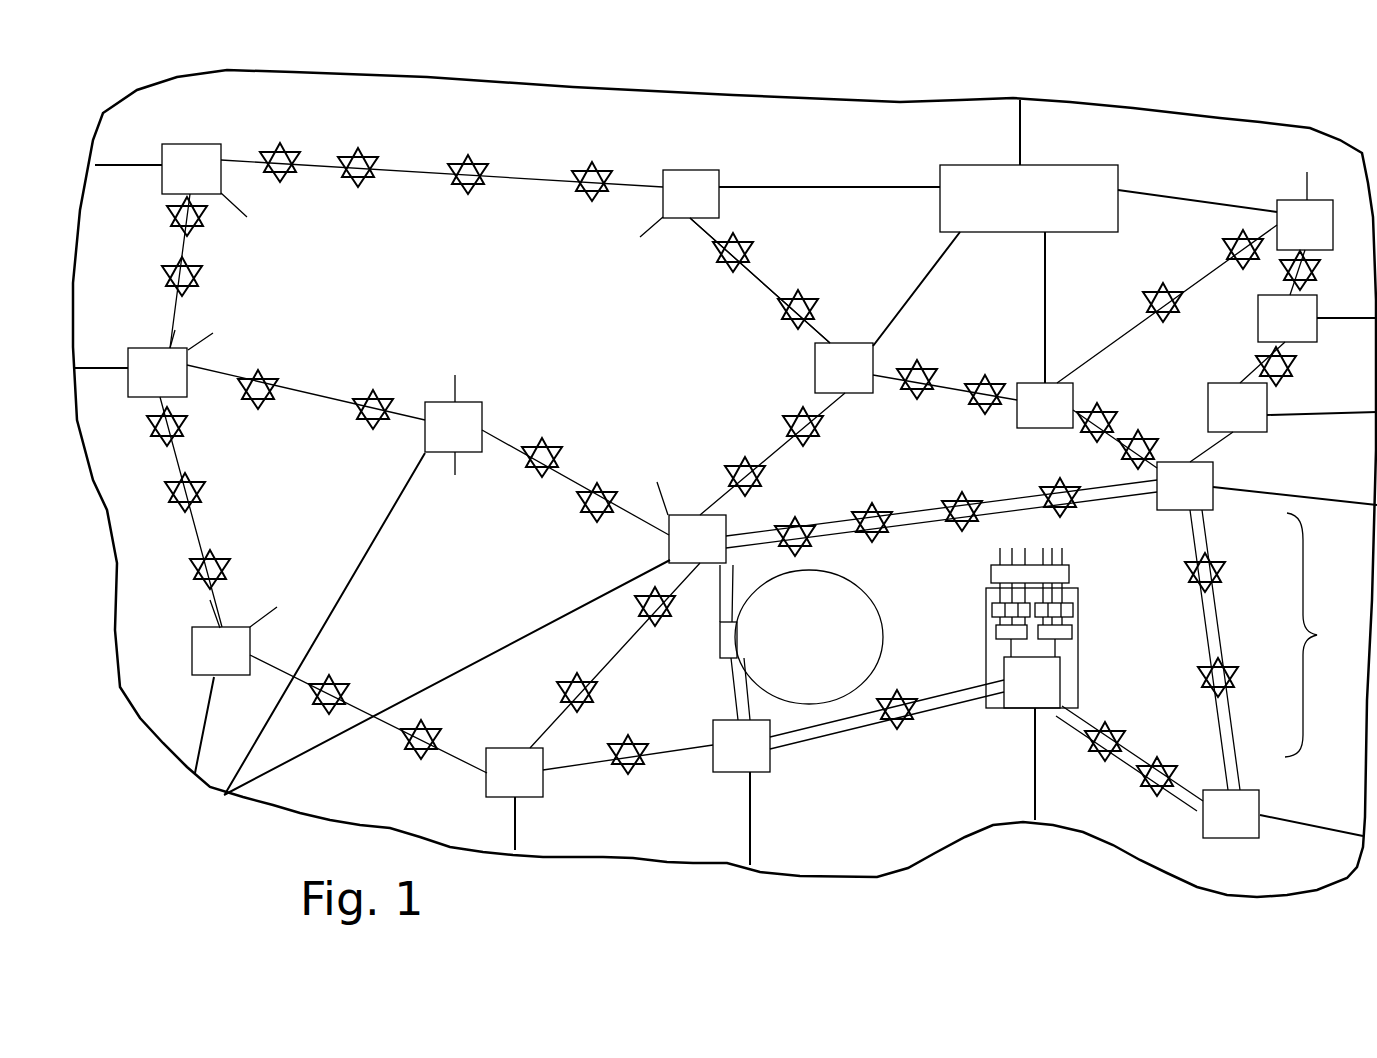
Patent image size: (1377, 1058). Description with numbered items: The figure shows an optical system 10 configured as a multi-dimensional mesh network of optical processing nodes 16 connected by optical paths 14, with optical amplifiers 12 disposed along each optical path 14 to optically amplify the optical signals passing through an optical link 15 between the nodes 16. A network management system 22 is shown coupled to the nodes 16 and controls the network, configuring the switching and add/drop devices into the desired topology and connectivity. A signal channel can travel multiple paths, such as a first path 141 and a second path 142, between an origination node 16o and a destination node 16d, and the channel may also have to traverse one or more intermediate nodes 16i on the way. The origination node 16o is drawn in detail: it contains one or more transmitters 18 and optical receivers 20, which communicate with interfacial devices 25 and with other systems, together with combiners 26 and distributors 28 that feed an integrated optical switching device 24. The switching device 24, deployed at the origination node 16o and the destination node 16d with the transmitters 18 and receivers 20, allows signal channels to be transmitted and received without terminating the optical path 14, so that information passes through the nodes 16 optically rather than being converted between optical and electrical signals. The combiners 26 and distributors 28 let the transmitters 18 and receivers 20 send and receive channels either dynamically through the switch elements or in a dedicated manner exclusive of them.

The optical system 10 is at (233, 836).
The optical amplifier 12 is at (810, 300).
The optical path 14 is at (762, 278).
The optical link 15 is at (1328, 635).
The optical processing node 16 is at (710, 171).
The destination node 16d is at (1213, 480).
The origination node 16o is at (919, 639).
The intermediate node 16i is at (1260, 813).
The transmitter 18 is at (992, 610).
The optical receiver 20 is at (1077, 607).
The network management system 22 is at (1118, 185).
The integrated optical switching device 24 is at (1060, 673).
The interfacial device 25 is at (1070, 567).
The combiner 26 is at (997, 633).
The distributor 28 is at (1078, 637).
The first path 141 is at (1250, 607).
The second path 142 is at (1006, 473).